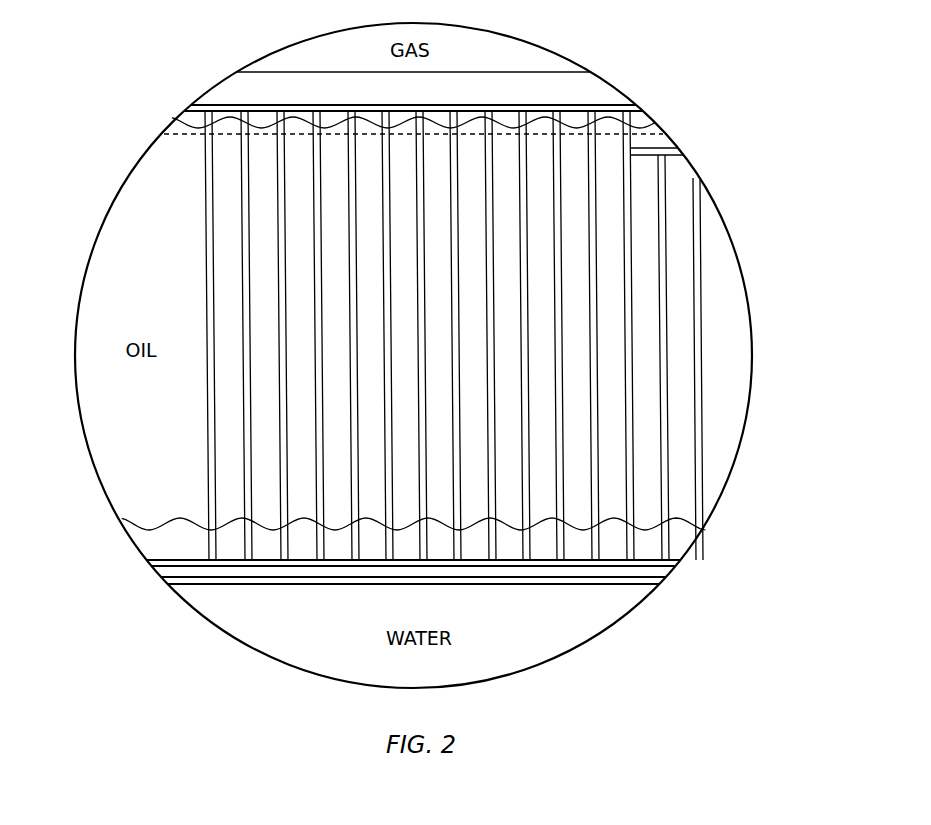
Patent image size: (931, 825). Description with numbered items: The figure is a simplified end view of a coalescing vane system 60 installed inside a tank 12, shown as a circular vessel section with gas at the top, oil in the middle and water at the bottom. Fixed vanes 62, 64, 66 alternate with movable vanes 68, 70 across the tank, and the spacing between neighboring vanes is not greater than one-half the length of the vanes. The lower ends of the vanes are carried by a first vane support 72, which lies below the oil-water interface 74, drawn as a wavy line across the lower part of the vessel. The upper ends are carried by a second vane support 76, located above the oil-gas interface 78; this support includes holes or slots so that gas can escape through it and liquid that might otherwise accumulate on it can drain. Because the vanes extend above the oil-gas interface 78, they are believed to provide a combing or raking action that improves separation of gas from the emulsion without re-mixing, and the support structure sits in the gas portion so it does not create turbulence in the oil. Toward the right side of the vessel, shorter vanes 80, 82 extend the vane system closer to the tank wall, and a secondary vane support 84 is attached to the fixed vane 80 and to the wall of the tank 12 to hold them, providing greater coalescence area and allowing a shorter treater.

The coalescing vane system 60 is at (655, 76).
The tank 12 is at (720, 212).
The second vane support 76 is at (609, 103).
The oil-gas interface 78 is at (204, 130).
The fixed vane 62 is at (206, 232).
The movable vane 68 is at (242, 232).
The fixed vane 64 is at (278, 232).
The movable vane 70 is at (314, 232).
The fixed vane 66 is at (349, 232).
The secondary vane support 84 is at (666, 148).
The shorter vane 80 is at (666, 228).
The shorter vane 82 is at (701, 276).
The oil-water interface 74 is at (181, 521).
The first vane support 72 is at (160, 561).